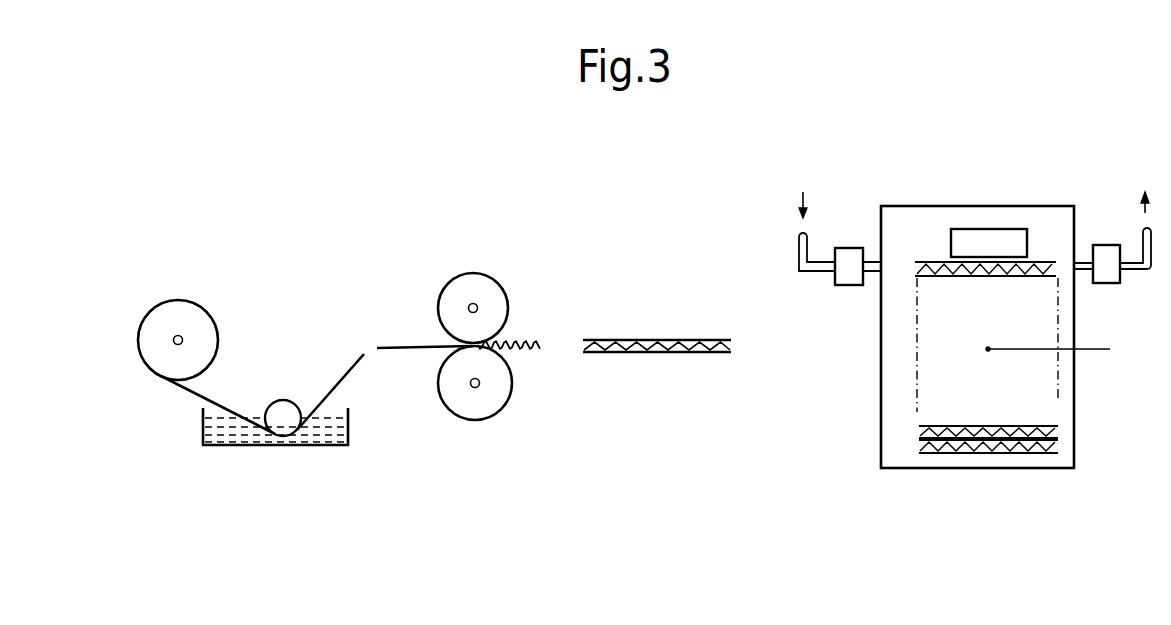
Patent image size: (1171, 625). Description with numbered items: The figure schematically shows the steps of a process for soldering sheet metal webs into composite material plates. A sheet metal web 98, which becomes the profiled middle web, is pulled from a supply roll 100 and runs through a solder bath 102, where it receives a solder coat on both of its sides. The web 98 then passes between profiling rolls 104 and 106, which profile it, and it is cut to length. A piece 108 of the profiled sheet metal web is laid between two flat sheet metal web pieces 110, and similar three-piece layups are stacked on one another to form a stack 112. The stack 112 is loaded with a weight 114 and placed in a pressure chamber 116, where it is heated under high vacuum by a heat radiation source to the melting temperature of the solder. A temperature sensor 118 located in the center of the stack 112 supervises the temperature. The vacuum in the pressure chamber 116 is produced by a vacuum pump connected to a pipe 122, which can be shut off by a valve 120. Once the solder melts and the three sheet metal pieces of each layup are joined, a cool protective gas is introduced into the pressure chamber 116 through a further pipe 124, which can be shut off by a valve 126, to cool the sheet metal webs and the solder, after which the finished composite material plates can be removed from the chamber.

The sheet metal web 98 is at (218, 401).
The supply roll 100 is at (188, 318).
The solder bath 102 is at (328, 438).
The profiling roll 104 is at (475, 284).
The profiling roll 106 is at (502, 393).
The piece of the profiled sheet metal web 108 is at (657, 347).
The flat sheet metal web pieces 110 is at (624, 340).
The stack 112 is at (919, 411).
The weight 114 is at (1005, 240).
The pressure chamber 116 is at (1076, 388).
The temperature sensor 118 is at (988, 352).
The valve 120 is at (1107, 256).
The pipe 122 is at (1142, 272).
The further pipe 124 is at (803, 282).
The valve 126 is at (850, 256).